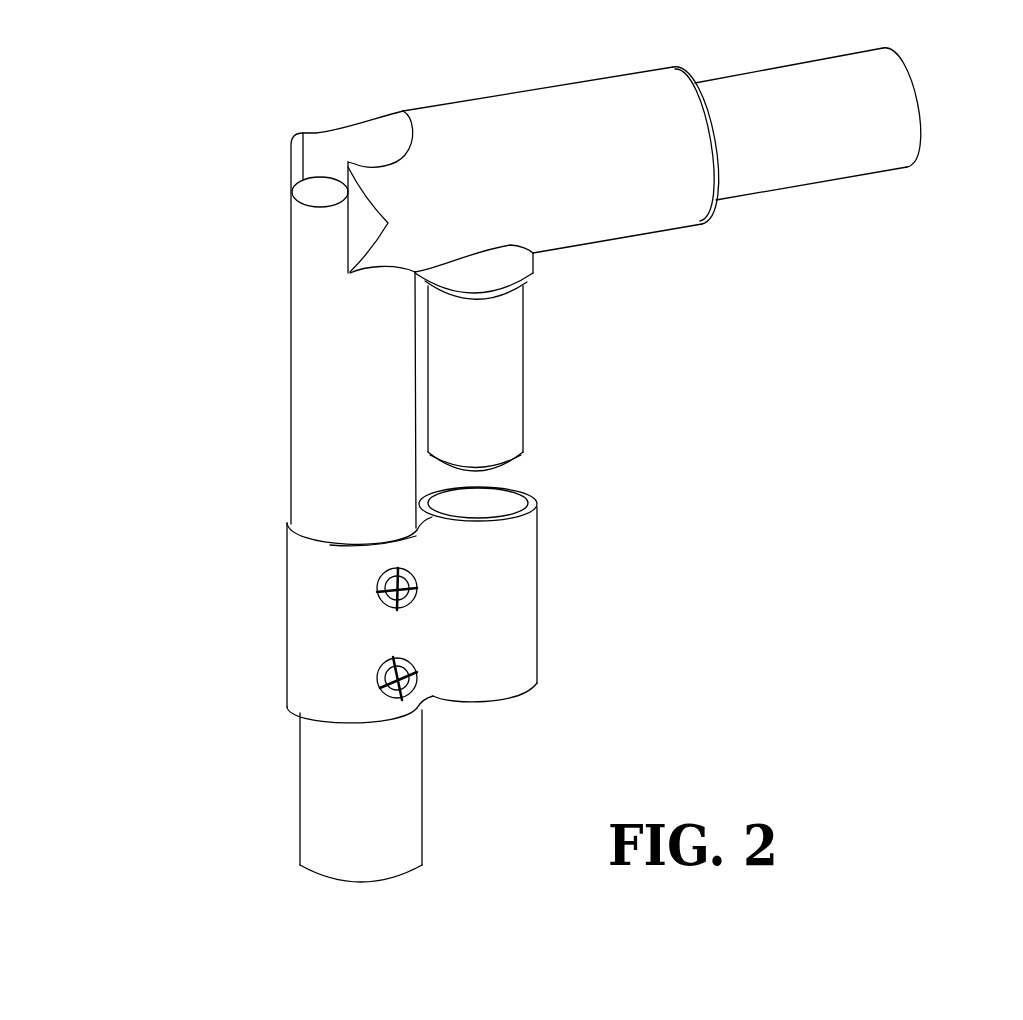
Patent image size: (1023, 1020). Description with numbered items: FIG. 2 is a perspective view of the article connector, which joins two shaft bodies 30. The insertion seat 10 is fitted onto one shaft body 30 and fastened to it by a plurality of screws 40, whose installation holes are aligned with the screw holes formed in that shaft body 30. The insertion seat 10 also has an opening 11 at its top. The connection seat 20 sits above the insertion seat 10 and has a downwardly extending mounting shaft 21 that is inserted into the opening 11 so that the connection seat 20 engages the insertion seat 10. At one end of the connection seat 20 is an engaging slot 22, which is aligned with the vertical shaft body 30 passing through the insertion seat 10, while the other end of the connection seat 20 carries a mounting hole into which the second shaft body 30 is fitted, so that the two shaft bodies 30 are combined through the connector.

The insertion seat 10 is at (320, 675).
The opening 11 is at (503, 487).
The connection seat 20 is at (613, 210).
The mounting shaft 21 is at (487, 345).
The engaging slot 22 is at (360, 142).
The shaft body 30 is at (307, 277).
The screws 40 is at (377, 593).